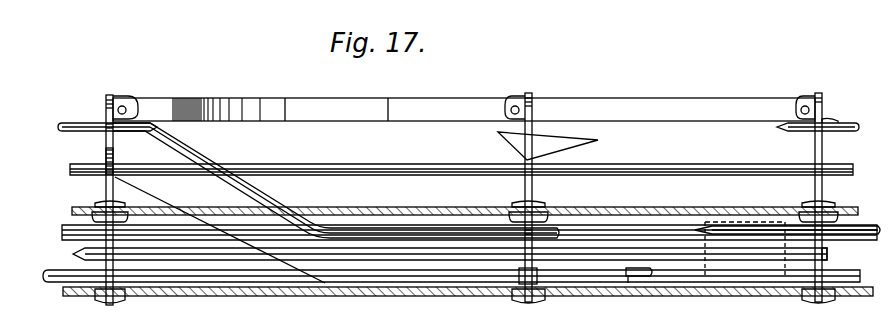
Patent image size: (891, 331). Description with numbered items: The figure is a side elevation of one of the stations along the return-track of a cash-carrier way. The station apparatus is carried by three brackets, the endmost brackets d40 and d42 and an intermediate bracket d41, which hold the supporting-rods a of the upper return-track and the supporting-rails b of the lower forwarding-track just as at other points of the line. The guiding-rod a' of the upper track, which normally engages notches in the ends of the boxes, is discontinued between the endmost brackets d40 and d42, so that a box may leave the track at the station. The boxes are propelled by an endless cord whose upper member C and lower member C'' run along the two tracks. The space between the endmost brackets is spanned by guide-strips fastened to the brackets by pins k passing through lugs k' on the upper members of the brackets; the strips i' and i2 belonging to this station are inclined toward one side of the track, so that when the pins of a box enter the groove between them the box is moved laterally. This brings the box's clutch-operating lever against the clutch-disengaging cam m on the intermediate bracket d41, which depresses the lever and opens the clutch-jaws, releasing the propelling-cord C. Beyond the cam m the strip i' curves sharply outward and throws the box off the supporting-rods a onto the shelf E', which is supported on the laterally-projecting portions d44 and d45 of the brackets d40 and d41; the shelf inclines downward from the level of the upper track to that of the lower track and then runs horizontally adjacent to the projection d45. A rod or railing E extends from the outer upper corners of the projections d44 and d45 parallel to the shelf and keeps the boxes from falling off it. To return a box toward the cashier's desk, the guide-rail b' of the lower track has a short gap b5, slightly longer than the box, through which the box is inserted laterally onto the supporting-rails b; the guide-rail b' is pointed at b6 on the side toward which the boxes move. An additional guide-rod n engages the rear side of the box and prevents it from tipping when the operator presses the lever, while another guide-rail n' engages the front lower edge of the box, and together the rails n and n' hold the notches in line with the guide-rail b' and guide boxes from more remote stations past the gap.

The guiding-rod of the upper track a' is at (447, 116).
The supporting-rods of the return-track a is at (446, 160).
The propelling-cord C is at (453, 203).
The guide-rail of the lower track b' is at (458, 231).
The supporting-rails of the forwarding-track b is at (446, 270).
The lower member of the cord C'' is at (451, 298).
The endmost station-bracket d40 is at (106, 106).
The intermediate station-bracket d41 is at (532, 100).
The endmost station-bracket d42 is at (822, 99).
The laterally-projecting portion of bracket d44 is at (106, 160).
The laterally-projecting portion of intermediate bracket d45 is at (522, 284).
The pins k is at (463, 110).
The lugs k' is at (464, 95).
The inclined guide-strip i' is at (464, 119).
The inclined guide-strip i2 is at (388, 110).
The shelf E' is at (336, 180).
The rod or railing E is at (265, 247).
The clutch-disengaging cam m is at (548, 146).
The gap in guide-rail b5 is at (450, 242).
The pointed end of guide-rod b6 is at (700, 230).
The additional guide-rod n is at (638, 253).
The guide-rail n' is at (643, 297).